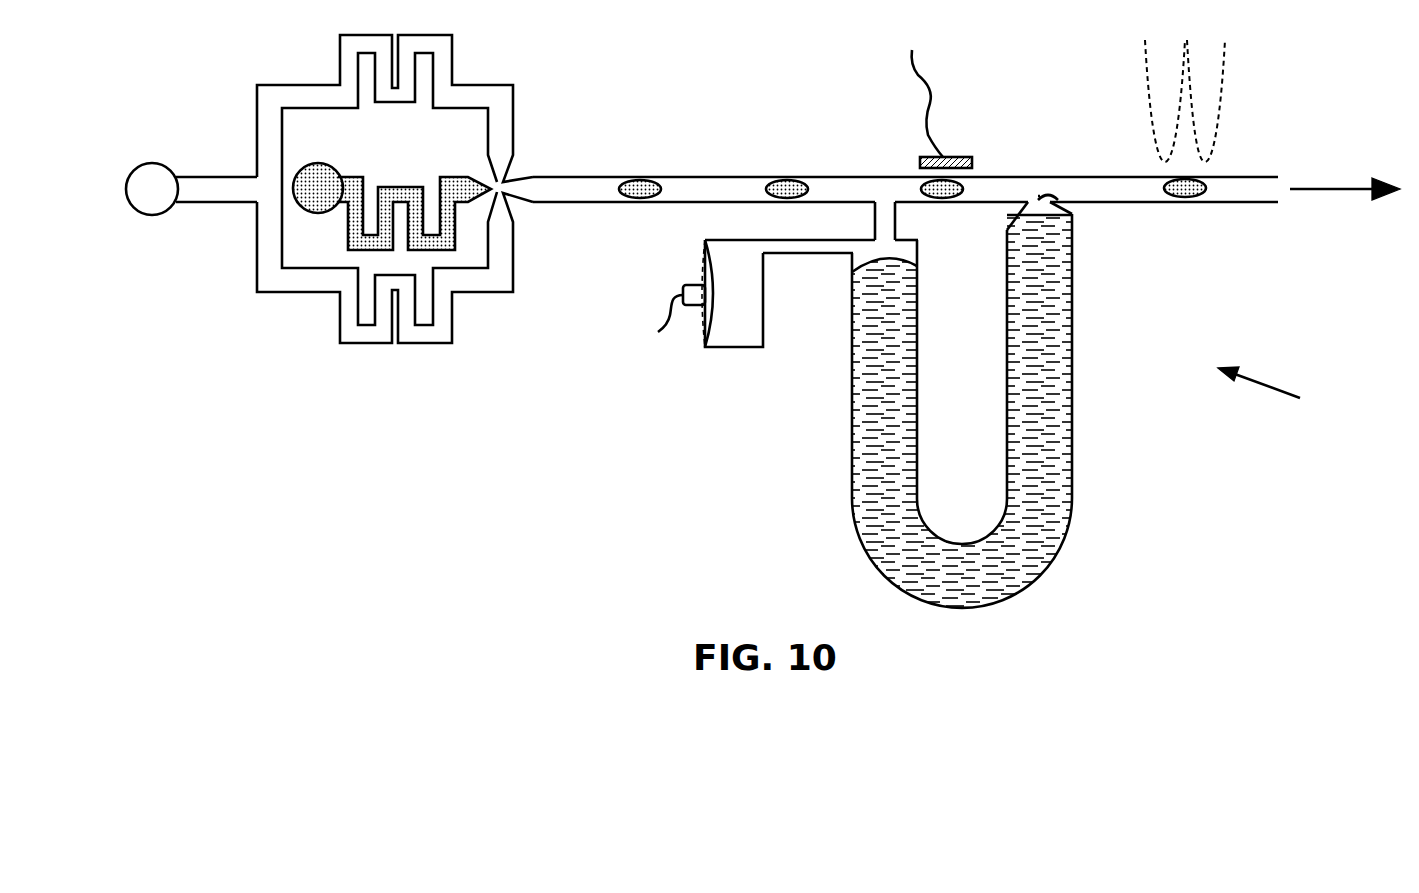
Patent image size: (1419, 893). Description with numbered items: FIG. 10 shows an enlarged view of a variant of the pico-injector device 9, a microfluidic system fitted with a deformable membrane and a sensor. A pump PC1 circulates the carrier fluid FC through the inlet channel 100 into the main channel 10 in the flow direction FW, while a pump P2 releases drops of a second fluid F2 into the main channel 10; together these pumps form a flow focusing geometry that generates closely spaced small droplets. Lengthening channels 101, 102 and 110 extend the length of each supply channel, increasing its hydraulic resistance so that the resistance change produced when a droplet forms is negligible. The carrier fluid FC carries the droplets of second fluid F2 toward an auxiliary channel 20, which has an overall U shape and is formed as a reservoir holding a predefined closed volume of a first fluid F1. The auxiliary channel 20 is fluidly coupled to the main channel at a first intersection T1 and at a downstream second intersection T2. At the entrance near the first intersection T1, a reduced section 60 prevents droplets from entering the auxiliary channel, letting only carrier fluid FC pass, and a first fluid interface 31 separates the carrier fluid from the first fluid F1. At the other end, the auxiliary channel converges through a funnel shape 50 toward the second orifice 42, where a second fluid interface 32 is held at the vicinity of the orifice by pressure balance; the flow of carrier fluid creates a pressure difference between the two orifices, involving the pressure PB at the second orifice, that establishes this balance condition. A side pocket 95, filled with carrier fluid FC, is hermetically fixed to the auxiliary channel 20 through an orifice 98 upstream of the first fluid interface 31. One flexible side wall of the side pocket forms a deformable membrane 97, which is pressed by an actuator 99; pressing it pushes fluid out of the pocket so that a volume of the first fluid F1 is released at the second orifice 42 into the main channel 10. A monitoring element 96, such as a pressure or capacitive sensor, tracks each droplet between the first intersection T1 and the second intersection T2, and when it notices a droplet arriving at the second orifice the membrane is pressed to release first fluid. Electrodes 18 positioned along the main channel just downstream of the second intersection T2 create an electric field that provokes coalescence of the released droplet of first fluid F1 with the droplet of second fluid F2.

The pico-injector device 9 is at (1268, 391).
The main channel 10 is at (725, 175).
The electrodes 18 is at (1207, 72).
The auxiliary channel 20 is at (1072, 430).
The first fluid interface 31 is at (867, 258).
The second fluid interface 32 is at (1050, 207).
The second orifice 42 is at (1052, 203).
The funnel shape 50 is at (1025, 214).
The reduced section 60 is at (897, 215).
The side pocket 95 is at (728, 348).
The monitoring element 96 is at (958, 157).
The deformable membrane 97 is at (708, 268).
The orifice 98 is at (853, 247).
The actuator 99 is at (683, 290).
The inlet channel 100 is at (225, 183).
The lengthening channel 101 is at (445, 67).
The lengthening channel 102 is at (445, 312).
The lengthening channel 110 is at (403, 187).
The pump PC1 is at (157, 190).
The pump P2 is at (320, 188).
The second fluid F2 is at (783, 180).
The first fluid F1 is at (1050, 365).
The carrier fluid FC is at (1247, 190).
The flow direction FW is at (1345, 201).
The first intersection T1 is at (884, 190).
The second intersection T2 is at (1040, 190).
The pressure at second orifice PB is at (1042, 190).